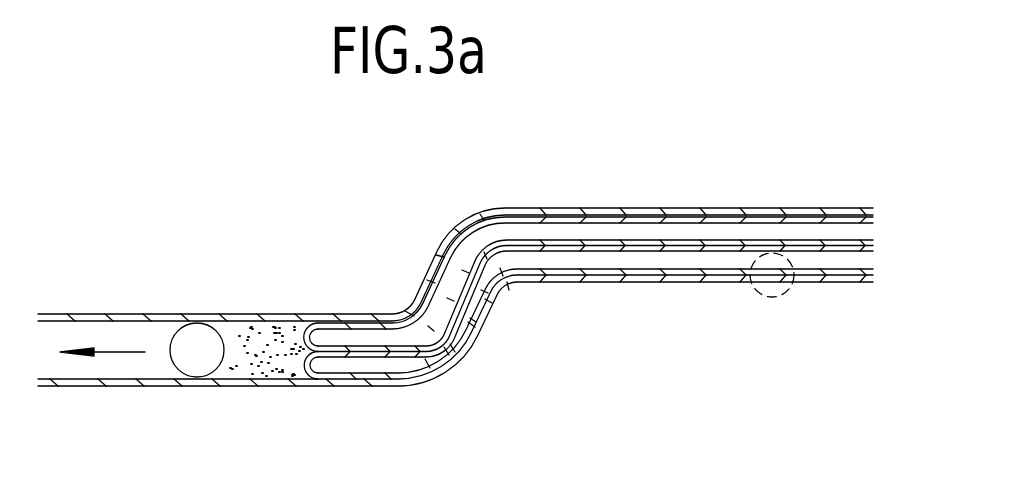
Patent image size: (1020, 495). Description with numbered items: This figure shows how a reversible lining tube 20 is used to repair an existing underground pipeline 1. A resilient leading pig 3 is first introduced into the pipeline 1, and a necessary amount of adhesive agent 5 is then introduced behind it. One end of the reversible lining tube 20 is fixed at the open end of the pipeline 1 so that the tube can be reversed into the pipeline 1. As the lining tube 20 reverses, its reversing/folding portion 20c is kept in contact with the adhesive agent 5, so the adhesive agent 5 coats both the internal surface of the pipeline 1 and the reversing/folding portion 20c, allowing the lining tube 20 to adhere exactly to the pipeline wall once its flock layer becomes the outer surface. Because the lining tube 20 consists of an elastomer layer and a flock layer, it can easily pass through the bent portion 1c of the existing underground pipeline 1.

The pipeline 1 is at (98, 313).
The bent portion 1c is at (497, 287).
The resilient leading pig 3 is at (184, 352).
The adhesive agent 5 is at (253, 333).
The reversible lining tube 20 is at (420, 312).
The reversing/folding portion 20c is at (300, 328).